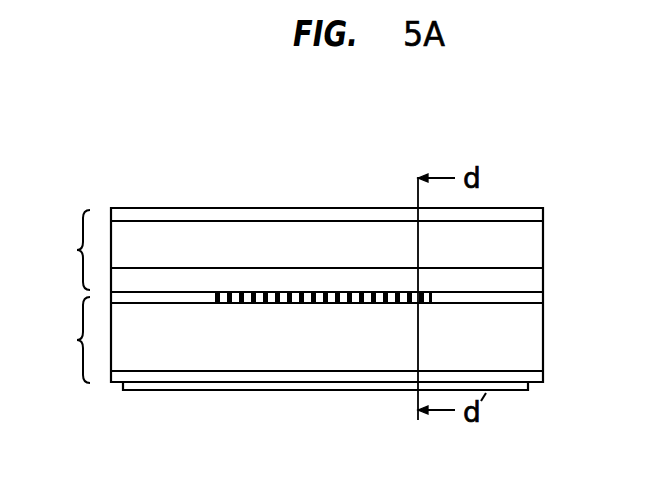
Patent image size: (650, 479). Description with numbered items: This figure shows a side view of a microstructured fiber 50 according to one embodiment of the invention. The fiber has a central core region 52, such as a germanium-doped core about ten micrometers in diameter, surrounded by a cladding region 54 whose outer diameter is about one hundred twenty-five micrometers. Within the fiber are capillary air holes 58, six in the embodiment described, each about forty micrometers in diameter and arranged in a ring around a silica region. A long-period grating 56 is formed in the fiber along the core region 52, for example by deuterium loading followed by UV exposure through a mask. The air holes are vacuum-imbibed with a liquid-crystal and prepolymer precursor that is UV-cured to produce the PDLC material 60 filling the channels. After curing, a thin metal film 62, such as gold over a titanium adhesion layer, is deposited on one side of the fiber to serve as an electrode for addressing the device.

The microstructured fiber 50 is at (576, 175).
The core region 52 is at (545, 293).
The cladding region 54 is at (67, 296).
The long-period grating 56 is at (274, 292).
The capillary air holes 58 is at (146, 213).
The PDLC material 60 is at (212, 237).
The thin metal film 62 is at (318, 391).